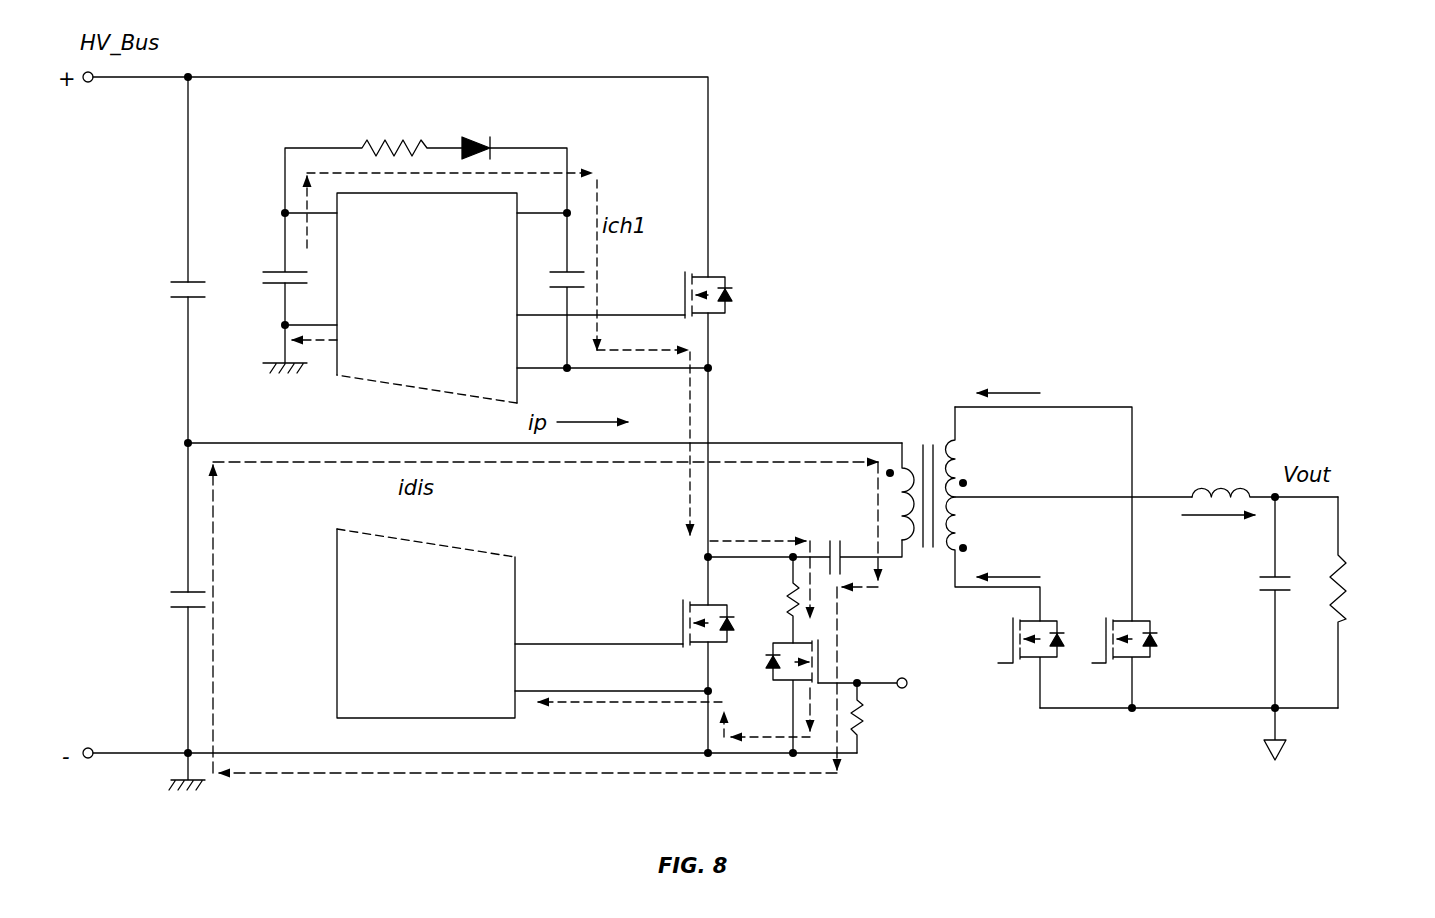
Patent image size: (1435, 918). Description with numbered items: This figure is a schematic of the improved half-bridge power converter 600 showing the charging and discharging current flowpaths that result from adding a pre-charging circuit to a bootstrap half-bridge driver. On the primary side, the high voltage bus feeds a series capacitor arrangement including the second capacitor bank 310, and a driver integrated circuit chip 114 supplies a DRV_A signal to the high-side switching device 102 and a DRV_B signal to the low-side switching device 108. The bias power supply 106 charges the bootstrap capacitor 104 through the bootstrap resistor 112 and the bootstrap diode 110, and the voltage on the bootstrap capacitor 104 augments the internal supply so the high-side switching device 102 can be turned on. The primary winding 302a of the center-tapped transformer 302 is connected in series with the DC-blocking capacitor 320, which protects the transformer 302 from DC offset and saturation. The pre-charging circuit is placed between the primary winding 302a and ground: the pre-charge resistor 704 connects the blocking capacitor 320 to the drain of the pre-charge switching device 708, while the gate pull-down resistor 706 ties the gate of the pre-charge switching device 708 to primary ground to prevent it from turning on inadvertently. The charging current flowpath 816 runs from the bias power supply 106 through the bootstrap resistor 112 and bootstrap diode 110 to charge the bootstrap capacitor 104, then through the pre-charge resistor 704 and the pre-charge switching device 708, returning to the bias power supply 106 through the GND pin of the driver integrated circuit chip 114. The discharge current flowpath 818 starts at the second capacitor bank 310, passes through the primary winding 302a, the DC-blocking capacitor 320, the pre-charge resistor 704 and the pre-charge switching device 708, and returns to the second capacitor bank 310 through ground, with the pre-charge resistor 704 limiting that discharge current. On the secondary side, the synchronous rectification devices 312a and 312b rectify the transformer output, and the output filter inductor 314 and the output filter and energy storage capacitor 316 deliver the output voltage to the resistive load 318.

The half-bridge power converter 600 is at (830, 104).
The high-side switching device 102 is at (717, 276).
The bootstrap capacitor 104 is at (557, 268).
The bias power supply 106 is at (272, 270).
The low-side switching device 108 is at (683, 616).
The bootstrap diode 110 is at (475, 137).
The bootstrap resistor 112 is at (364, 140).
The driver integrated circuit chip 114 is at (427, 455).
The transformer 302 is at (1031, 469).
The primary winding 302a is at (912, 450).
The second capacitor bank 310 is at (180, 592).
The synchronous rectification device 312a is at (1052, 618).
The synchronous rectification device 312b is at (1145, 618).
The output filter inductor 314 is at (1222, 486).
The output filter and energy storage capacitor 316 is at (1287, 575).
The resistive load 318 is at (1345, 560).
The DC-blocking capacitor 320 is at (829, 542).
The pre-charge resistor 704 is at (791, 594).
The gate pull-down resistor 706 is at (863, 716).
The pre-charge switching device 708 is at (782, 642).
The charging current flowpath 816 is at (598, 186).
The discharge current flowpath 818 is at (553, 462).